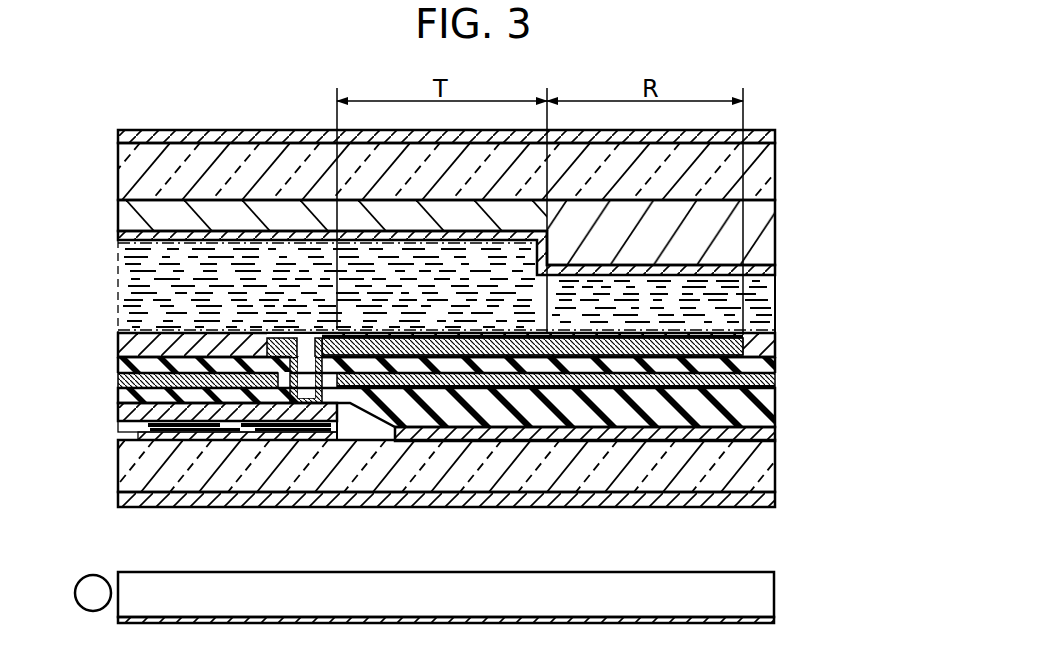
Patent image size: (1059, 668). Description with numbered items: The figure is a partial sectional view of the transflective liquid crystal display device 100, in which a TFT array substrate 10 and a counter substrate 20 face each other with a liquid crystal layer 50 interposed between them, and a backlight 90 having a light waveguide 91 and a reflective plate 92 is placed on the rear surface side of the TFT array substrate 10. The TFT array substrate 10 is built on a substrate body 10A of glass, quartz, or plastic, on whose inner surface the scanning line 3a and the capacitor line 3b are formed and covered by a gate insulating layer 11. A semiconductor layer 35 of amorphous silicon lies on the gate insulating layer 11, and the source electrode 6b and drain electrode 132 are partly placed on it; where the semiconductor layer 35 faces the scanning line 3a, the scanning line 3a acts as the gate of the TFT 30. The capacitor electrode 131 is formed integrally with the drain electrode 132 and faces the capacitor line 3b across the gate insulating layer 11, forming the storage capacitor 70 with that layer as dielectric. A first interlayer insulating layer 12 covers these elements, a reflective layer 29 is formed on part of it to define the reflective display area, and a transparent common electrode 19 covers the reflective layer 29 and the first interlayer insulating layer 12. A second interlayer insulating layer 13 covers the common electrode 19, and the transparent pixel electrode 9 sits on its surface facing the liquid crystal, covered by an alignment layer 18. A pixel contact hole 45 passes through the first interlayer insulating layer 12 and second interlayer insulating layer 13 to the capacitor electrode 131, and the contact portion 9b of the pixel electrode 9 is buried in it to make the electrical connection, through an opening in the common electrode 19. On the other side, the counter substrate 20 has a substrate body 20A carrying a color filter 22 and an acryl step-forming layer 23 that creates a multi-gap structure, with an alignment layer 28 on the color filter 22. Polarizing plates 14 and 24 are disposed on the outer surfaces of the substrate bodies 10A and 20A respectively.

The liquid crystal display device 100 is at (782, 106).
The counter substrate 20 is at (118, 131).
The substrate body 20A is at (775, 172).
The polarizing plate 24 is at (775, 134).
The step-forming layer 23 is at (775, 213).
The color filter 22 is at (775, 268).
The alignment layer 28 is at (775, 278).
The liquid crystal layer 50 is at (775, 300).
The TFT array substrate 10 is at (118, 333).
The substrate body 10A is at (775, 466).
The alignment layer 18 is at (775, 342).
The reflective layer 29 is at (670, 368).
The pixel electrode 9 is at (450, 342).
The contact portion 9b is at (273, 340).
The pixel contact hole 45 is at (305, 356).
The second interlayer insulating layer 13 is at (775, 365).
The common electrode 19 is at (775, 381).
The first interlayer insulating layer 12 is at (775, 410).
The source electrode 6b is at (126, 400).
The gate insulating layer 11 is at (775, 436).
The storage capacitor 70 is at (403, 425).
The TFT 30 is at (158, 450).
The semiconductor layer 35 is at (185, 430).
The scanning line 3a is at (218, 432).
The drain electrode 132 is at (238, 432).
The capacitor electrode 131 is at (320, 433).
The capacitor line 3b is at (330, 428).
The polarizing plate 14 is at (775, 500).
The backlight 90 is at (838, 572).
The light waveguide 91 is at (775, 590).
The reflective plate 92 is at (775, 619).